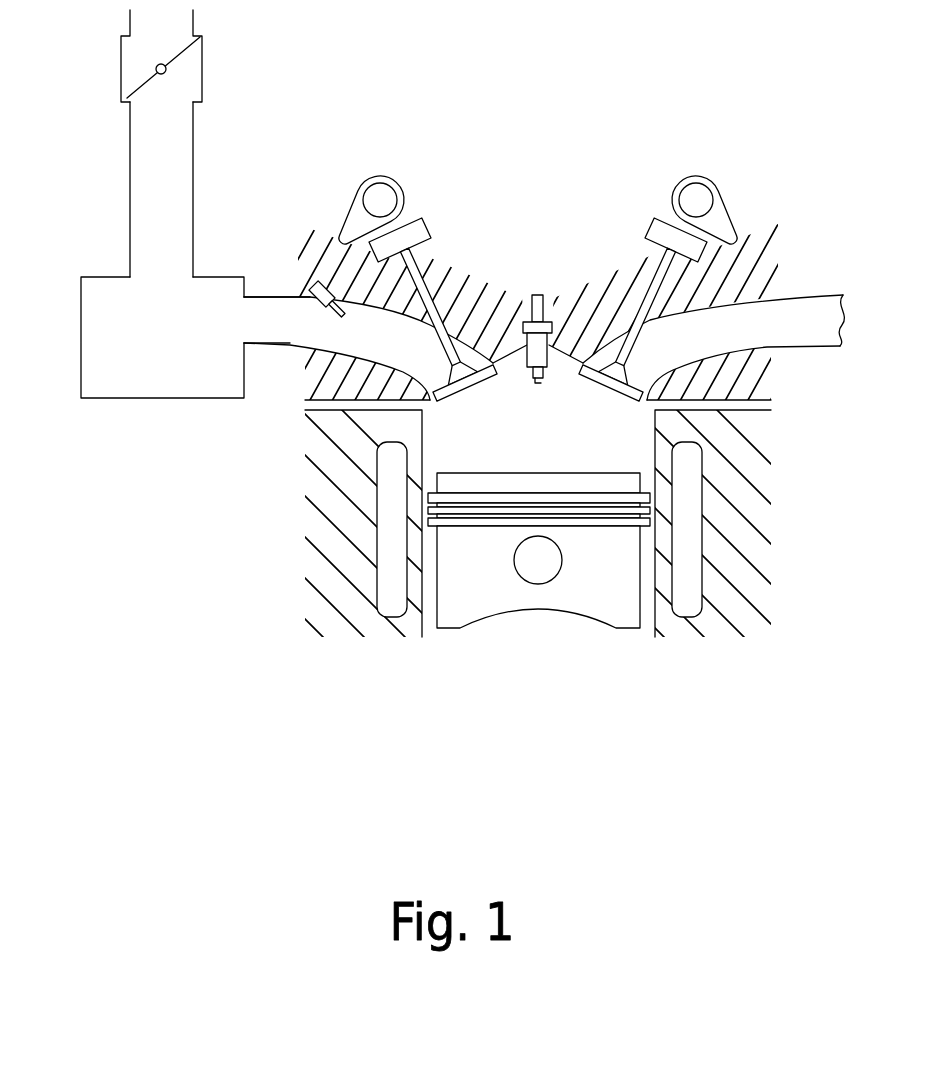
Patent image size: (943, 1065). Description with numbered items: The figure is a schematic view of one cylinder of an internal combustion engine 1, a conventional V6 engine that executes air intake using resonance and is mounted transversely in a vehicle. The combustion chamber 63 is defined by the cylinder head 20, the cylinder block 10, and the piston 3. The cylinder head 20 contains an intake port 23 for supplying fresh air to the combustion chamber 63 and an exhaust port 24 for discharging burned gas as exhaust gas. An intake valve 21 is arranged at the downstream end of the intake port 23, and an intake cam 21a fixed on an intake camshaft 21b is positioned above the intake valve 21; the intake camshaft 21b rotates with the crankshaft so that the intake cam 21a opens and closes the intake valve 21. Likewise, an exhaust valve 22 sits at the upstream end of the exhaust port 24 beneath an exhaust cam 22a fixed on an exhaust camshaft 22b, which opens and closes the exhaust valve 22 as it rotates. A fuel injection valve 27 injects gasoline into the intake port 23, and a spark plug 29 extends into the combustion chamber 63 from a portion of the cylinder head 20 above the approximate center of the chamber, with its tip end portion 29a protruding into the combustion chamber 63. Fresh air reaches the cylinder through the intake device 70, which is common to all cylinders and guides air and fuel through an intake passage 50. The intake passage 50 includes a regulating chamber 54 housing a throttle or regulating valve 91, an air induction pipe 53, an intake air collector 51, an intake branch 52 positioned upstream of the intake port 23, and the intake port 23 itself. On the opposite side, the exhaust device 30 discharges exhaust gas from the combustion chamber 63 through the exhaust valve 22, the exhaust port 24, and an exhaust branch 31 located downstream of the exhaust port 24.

The internal combustion engine 1 is at (372, 718).
The piston 3 is at (601, 603).
The cylinder block 10 is at (318, 527).
The cylinder head 20 is at (330, 380).
The intake valve 21 is at (497, 370).
The intake cam 21a is at (350, 243).
The intake camshaft 21b is at (377, 192).
The exhaust valve 22 is at (582, 374).
The exhaust cam 22a is at (720, 223).
The exhaust camshaft 22b is at (695, 197).
The intake port 23 is at (382, 333).
The exhaust port 24 is at (708, 337).
The fuel injection valve 27 is at (310, 293).
The spark plug 29 is at (543, 300).
The tip end portion 29a is at (535, 383).
The exhaust device 30 is at (810, 455).
The exhaust branch 31 is at (783, 327).
The intake passage 50 is at (137, 498).
The intake air collector 51 is at (148, 388).
The intake branch 52 is at (265, 332).
The air induction pipe 53 is at (157, 173).
The regulating chamber 54 is at (130, 57).
The combustion chamber 63 is at (618, 460).
The intake device 70 is at (134, 623).
The regulating valve 91 is at (188, 61).